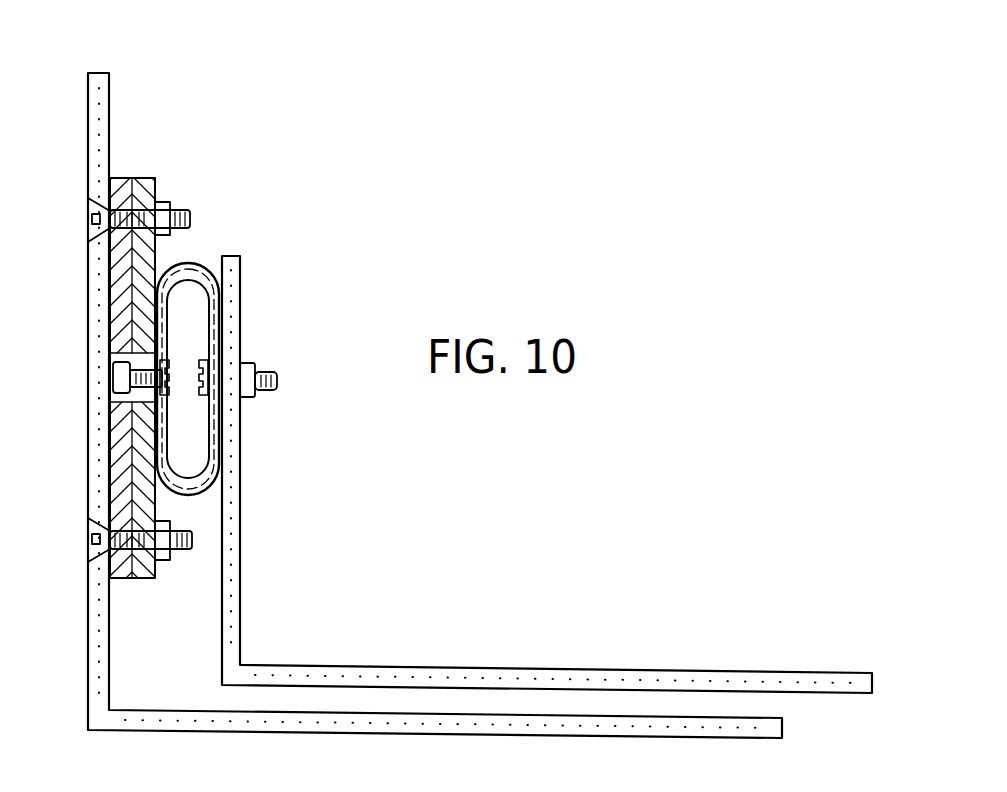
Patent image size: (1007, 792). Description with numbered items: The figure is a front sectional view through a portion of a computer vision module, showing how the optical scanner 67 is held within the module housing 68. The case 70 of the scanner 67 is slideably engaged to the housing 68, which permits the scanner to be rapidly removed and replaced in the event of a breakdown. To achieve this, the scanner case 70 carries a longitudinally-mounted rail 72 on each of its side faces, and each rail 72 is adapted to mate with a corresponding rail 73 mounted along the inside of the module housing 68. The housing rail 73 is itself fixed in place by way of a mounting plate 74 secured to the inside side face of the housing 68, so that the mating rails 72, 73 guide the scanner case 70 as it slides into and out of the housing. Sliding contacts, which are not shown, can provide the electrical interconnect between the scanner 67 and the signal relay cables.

The optical scanner 67 is at (337, 160).
The housing 68 is at (103, 664).
The scanner case 70 is at (230, 598).
The rail 72 is at (213, 322).
The rail 73 is at (198, 264).
The mounting plate 74 is at (137, 307).